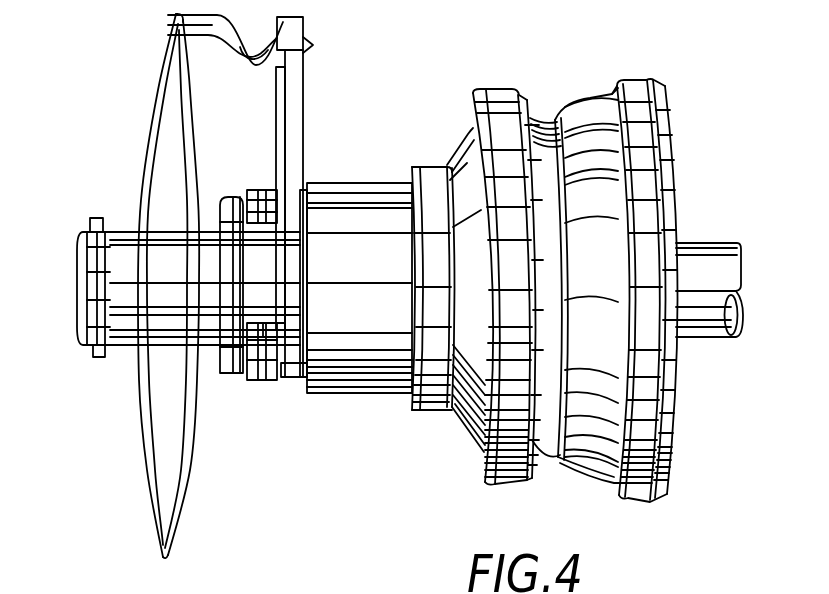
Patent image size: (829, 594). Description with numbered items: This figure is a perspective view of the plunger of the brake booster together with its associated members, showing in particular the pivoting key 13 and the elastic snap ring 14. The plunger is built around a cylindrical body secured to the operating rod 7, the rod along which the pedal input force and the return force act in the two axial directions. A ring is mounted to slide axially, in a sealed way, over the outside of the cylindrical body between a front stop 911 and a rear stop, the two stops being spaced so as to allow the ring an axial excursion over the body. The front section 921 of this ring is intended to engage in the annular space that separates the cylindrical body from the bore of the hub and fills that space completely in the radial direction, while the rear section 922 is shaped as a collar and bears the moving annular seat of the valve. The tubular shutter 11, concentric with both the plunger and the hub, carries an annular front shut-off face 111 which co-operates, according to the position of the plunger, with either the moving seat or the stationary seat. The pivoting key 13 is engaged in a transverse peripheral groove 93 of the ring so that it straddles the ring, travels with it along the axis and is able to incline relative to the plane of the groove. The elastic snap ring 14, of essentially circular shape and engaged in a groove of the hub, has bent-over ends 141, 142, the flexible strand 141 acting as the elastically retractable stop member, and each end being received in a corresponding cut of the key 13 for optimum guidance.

The operating rod 7 is at (727, 268).
The tubular shutter 11 is at (537, 173).
The pivoting key 13 is at (303, 123).
The elastic snap ring 14 is at (133, 472).
The transverse peripheral groove 93 is at (285, 378).
The annular front shut-off face 111 is at (477, 456).
The elastically retractable stop member 141 is at (279, 72).
The end of the snap ring 142 is at (202, 48).
The front stop 911 is at (237, 375).
The front section of the ring 921 is at (352, 402).
The rear section of the ring 922 is at (456, 141).